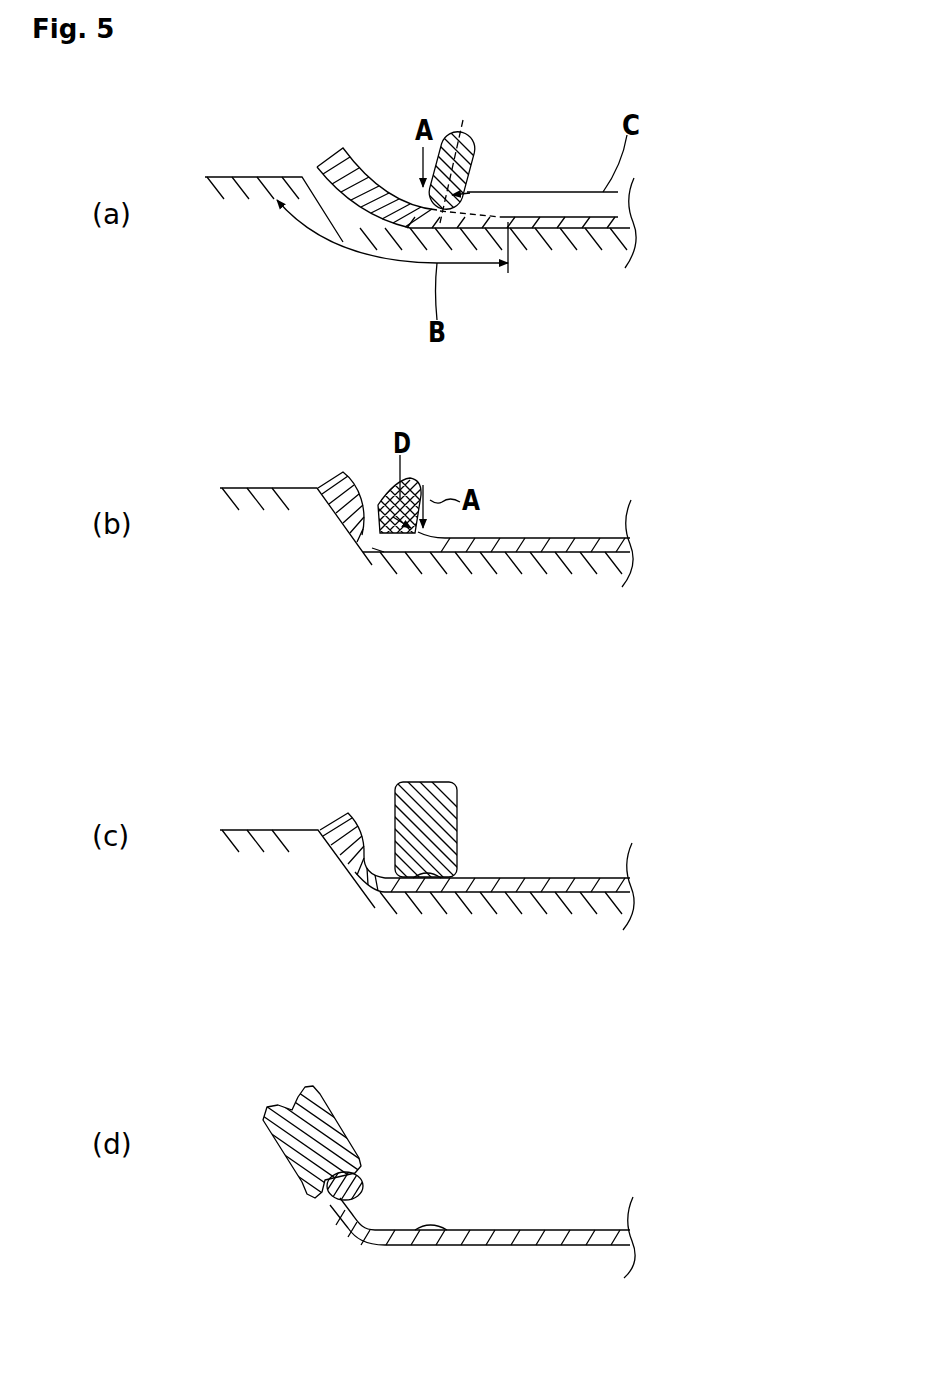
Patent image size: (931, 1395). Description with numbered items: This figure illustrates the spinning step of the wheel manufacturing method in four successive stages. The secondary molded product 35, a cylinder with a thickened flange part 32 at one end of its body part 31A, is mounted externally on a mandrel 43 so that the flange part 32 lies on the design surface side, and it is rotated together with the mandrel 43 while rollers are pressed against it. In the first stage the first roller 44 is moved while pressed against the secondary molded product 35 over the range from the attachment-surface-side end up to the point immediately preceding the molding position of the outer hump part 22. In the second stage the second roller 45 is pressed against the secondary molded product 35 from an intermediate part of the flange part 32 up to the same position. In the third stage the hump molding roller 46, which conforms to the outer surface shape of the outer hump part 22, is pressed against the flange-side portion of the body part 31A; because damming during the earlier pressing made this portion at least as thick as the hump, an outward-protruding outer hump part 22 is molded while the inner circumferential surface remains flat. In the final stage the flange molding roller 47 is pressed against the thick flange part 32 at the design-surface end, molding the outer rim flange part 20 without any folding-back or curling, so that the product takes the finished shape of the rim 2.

The rim 2 is at (480, 1187).
The outer rim flange part 20 is at (360, 1193).
The outer hump part 22 is at (430, 873).
The body part of the secondary molded product 31A is at (548, 222).
The flange part 32 is at (347, 198).
The secondary molded product 35 is at (474, 508).
The mandrel 43 is at (248, 180).
The first roller 44 is at (465, 140).
The second roller 45 is at (380, 547).
The hump molding roller 46 is at (445, 790).
The flange molding roller 47 is at (290, 1150).